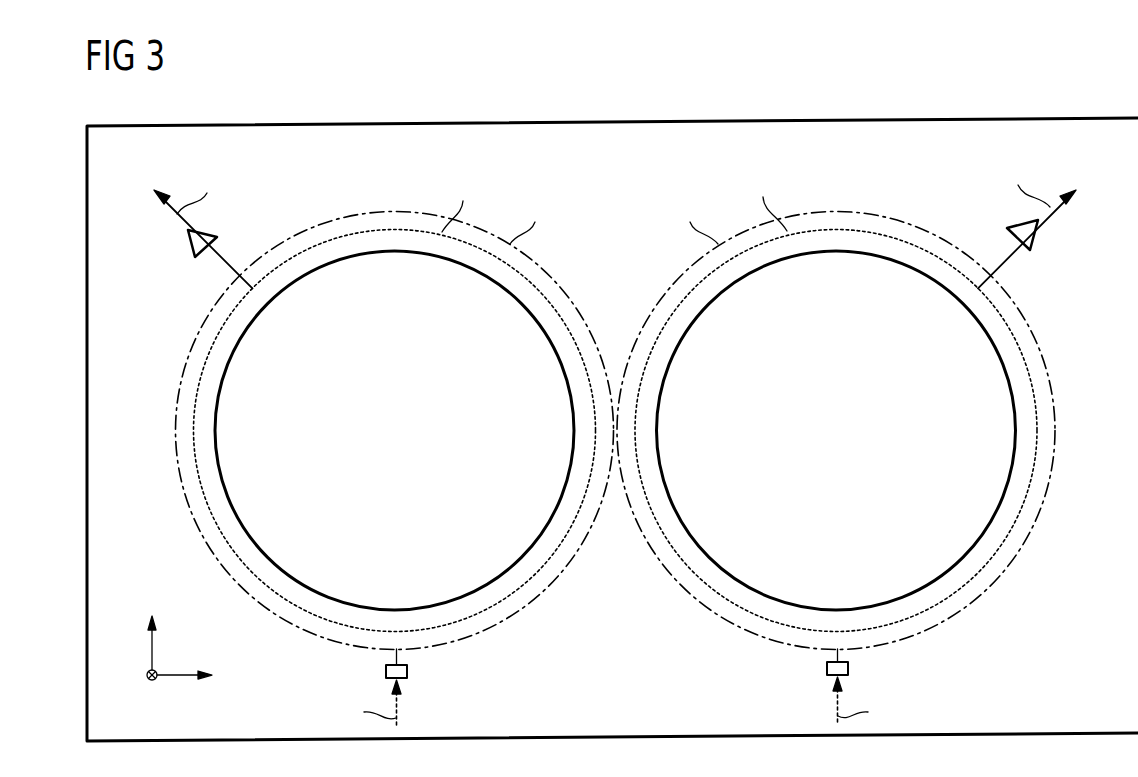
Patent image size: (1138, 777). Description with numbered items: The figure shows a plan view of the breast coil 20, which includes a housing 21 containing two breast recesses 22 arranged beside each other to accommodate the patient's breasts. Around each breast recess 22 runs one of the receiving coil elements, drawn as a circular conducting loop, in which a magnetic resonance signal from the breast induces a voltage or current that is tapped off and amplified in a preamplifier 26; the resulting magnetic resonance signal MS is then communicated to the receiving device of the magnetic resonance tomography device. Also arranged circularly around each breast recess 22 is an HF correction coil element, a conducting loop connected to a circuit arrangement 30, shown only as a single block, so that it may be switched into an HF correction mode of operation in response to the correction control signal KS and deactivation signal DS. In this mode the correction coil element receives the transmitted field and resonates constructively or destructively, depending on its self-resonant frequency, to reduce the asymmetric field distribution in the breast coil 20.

The breast coil 20 is at (970, 76).
The housing 21 is at (610, 150).
The breast recess 22 is at (510, 542).
The preamplifier 26 is at (188, 238).
The circuit arrangement 30 is at (407, 670).